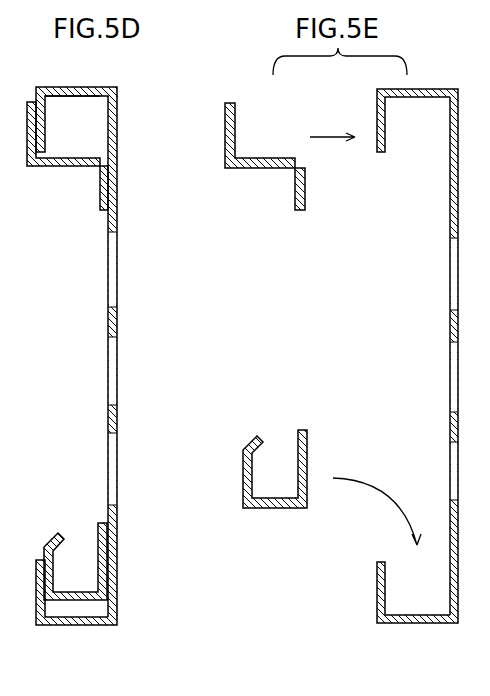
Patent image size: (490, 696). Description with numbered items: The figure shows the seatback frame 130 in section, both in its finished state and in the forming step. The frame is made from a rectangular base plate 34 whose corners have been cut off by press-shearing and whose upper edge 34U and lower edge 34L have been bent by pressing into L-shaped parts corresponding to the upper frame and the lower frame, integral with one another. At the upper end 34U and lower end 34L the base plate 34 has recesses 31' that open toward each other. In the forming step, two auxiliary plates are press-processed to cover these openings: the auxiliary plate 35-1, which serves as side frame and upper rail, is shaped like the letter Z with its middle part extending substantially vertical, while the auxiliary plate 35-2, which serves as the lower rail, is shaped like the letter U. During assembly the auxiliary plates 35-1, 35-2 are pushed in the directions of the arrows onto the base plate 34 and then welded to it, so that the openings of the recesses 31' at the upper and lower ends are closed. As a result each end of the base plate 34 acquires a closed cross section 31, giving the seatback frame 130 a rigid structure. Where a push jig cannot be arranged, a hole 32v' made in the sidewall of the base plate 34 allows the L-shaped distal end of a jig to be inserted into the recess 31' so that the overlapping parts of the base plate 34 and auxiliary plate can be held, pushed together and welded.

In FIG. 5D, the closed cross section 31 is at (103, 356).
In FIG. 5E, the recess 31' is at (388, 356).
In FIG. 5E, the base plate 34 is at (433, 95).
In FIG. 5D, the upper edge 34U is at (97, 88).
In FIG. 5D, the lower edge 34L is at (83, 625).
In FIG. 5E, the lower edge 34L is at (427, 625).
In FIG. 5D, the auxiliary plate 35-1 is at (67, 167).
In FIG. 5D, the auxiliary plate 35-2 is at (57, 532).
In FIG. 5D, the hole 32v' is at (60, 74).
In FIG. 5D, the seatback frame 130 is at (133, 192).